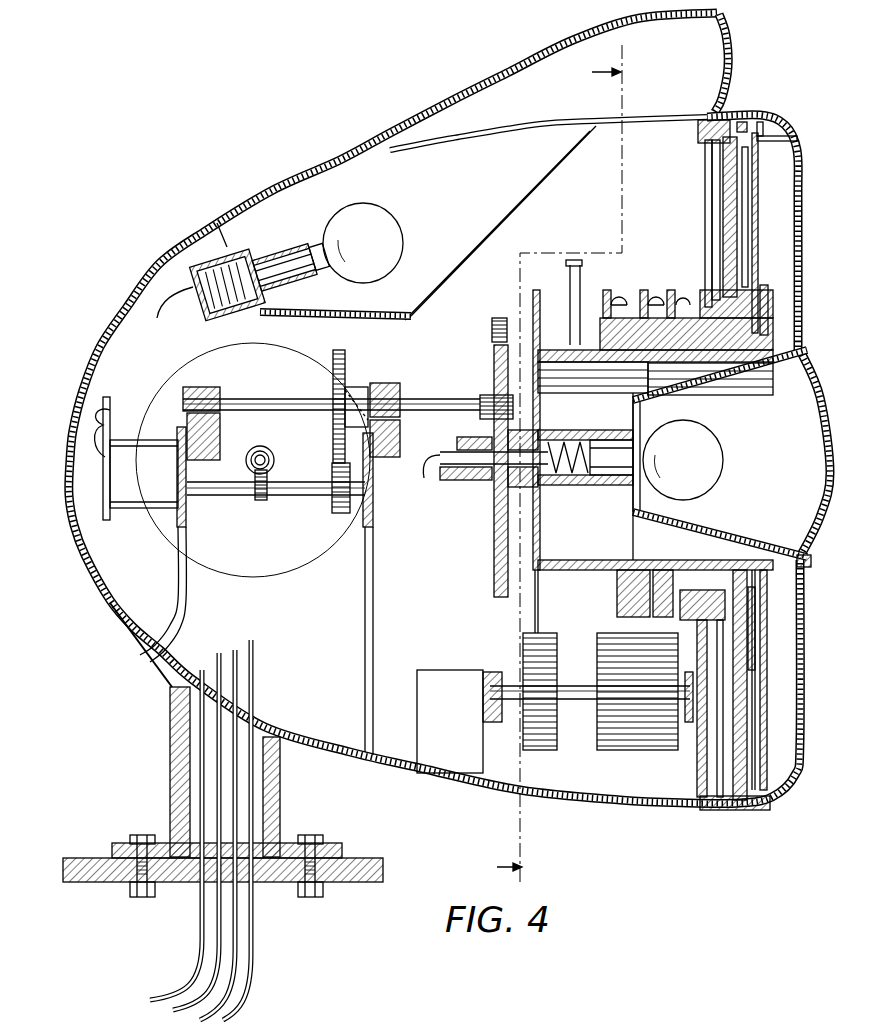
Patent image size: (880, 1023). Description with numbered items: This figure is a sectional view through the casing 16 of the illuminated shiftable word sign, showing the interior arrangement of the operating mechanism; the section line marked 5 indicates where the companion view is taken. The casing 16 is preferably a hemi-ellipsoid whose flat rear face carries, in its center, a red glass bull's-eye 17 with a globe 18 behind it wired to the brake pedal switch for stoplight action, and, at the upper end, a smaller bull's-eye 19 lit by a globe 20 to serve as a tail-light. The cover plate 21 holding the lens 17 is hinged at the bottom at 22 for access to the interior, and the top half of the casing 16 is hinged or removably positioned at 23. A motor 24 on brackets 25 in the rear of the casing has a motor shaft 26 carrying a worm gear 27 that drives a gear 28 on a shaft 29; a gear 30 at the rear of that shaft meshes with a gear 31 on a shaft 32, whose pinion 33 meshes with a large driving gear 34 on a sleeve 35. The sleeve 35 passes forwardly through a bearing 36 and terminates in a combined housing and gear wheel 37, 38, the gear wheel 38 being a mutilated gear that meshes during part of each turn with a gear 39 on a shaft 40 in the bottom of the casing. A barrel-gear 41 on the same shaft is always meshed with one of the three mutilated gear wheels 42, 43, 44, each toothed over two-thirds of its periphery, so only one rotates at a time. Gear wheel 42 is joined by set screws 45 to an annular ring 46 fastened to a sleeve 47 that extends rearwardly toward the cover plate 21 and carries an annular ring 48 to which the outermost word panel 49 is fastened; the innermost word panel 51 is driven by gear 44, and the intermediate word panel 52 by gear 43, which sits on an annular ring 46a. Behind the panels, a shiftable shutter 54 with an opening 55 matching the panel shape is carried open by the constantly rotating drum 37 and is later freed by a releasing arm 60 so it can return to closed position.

The casing 16 is at (160, 265).
The bull's-eye (stoplight lens) 17 is at (812, 357).
The globe 18 is at (722, 473).
The smaller bull's-eye 19 is at (730, 68).
The globe 20 is at (385, 232).
The cover plate 21 is at (795, 262).
The hinge 22 is at (733, 808).
The hinge (removable mounting of casing top half) 23 is at (80, 460).
The motor 24 is at (297, 547).
The brackets 25 is at (182, 573).
The motor shaft 26 is at (274, 453).
The worm gear 27 is at (274, 463).
The gear 28 is at (260, 495).
The shaft 29 is at (302, 490).
The gear 30 is at (340, 513).
The gear 31 is at (347, 357).
The shaft 32 is at (278, 397).
The pinion 33 is at (484, 398).
The large driving gear 34 is at (494, 337).
The sleeve 35 is at (487, 480).
The bearing 36 is at (527, 488).
The housing (drum) 37 is at (547, 348).
The mutilated gear wheel 38 is at (532, 290).
The gear 39 is at (541, 750).
The shaft 40 is at (583, 699).
The barrel-gear 41 is at (637, 750).
The mutilated gear wheel 42 is at (607, 290).
The mutilated gear wheel 43 is at (643, 290).
The mutilated gear wheel 44 is at (670, 290).
The set screws 45 is at (608, 322).
The annular ring 46 is at (627, 297).
The annular ring 46a is at (655, 297).
The sleeve 47 is at (673, 364).
The annular ring 48 is at (764, 330).
The outermost rotatable word panel 49 is at (782, 138).
The innermost rotatable word panel 51 is at (742, 128).
The intermediate word panel 52 is at (762, 127).
The shiftable shutter 54 is at (703, 145).
The opening 55 is at (707, 192).
The releasing arm 60 is at (565, 368).
The section line 5- 5 is at (568, 465).